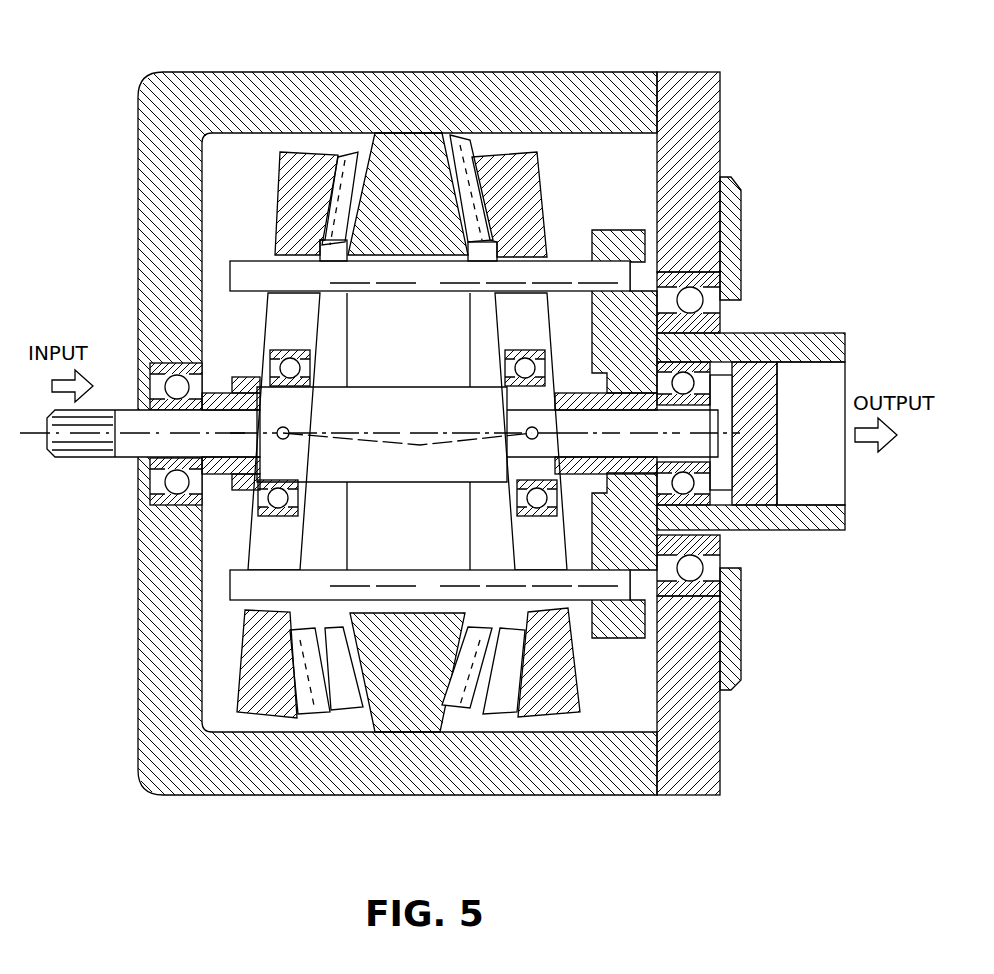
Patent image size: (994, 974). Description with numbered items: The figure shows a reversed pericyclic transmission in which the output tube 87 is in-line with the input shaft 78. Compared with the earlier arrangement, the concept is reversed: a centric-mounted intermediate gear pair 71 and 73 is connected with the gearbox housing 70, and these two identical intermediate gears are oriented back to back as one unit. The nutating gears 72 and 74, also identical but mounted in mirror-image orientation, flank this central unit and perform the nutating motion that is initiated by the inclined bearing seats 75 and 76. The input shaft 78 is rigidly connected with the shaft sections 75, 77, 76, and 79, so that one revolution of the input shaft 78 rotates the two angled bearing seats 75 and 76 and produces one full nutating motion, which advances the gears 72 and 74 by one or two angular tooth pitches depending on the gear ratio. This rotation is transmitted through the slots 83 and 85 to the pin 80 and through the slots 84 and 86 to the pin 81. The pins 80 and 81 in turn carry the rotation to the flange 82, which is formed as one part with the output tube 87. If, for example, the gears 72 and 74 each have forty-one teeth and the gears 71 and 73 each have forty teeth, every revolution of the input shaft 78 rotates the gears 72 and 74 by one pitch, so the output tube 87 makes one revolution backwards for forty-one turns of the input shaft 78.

The gearbox housing 70 is at (150, 245).
The intermediate gear 71 is at (382, 195).
The nutating gear 72 is at (288, 187).
The intermediate gear 73 is at (432, 180).
The nutating gear 74 is at (512, 190).
The inclined bearing seat 75 is at (270, 463).
The inclined bearing seat 76 is at (522, 463).
The shaft section 77 is at (390, 455).
The input shaft 78 is at (133, 445).
The shaft section 79 is at (640, 433).
The pin 80 is at (602, 275).
The pin 81 is at (612, 600).
The flange 82 is at (663, 182).
The slot 83 is at (290, 252).
The slot 84 is at (275, 620).
The slot 85 is at (495, 252).
The slot 86 is at (565, 620).
The output tube 87 is at (778, 335).